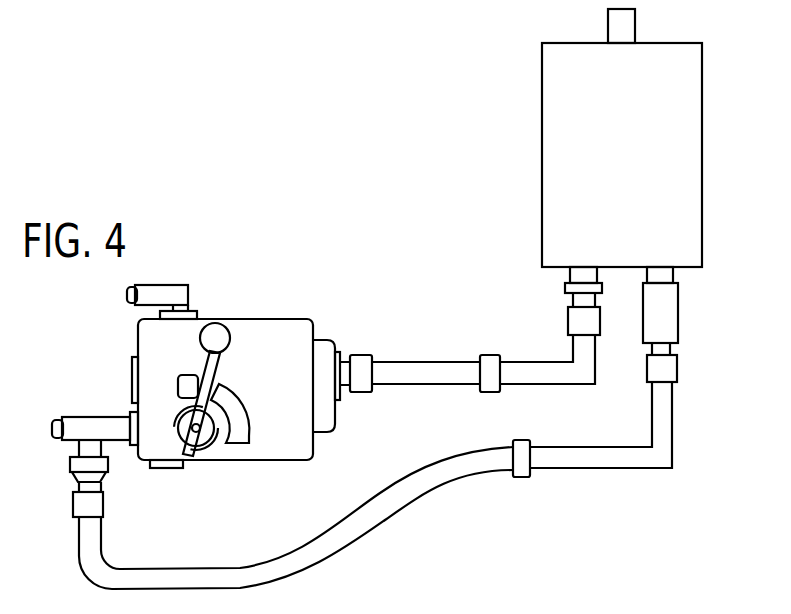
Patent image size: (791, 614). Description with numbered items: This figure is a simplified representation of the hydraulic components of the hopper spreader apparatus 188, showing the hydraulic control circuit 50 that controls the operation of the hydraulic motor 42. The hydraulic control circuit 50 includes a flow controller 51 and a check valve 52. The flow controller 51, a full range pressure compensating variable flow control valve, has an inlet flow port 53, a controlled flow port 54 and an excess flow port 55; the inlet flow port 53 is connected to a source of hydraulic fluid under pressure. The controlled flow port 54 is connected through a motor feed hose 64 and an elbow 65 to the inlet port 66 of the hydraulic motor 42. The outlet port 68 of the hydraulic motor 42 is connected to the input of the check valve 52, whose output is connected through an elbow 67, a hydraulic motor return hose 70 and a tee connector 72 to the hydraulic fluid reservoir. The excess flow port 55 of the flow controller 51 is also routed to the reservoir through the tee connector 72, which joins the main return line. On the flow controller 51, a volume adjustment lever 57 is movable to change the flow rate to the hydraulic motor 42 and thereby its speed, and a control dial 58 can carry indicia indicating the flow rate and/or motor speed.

The sprayer apparatus 188 is at (243, 0).
The hydraulic motor 42 is at (553, 132).
The hydraulic control circuit 50 is at (572, 517).
The flow controller 51 is at (290, 318).
The check valve 52 is at (668, 320).
The inlet flow port 53 is at (208, 318).
The controlled flow port 54 is at (343, 348).
The excess flow port 55 is at (126, 445).
The volume adjustment lever 57 is at (212, 358).
The control dial 58 is at (238, 418).
The motor feed hose 64 is at (418, 367).
The elbow 65 is at (558, 386).
The inlet port 66 is at (562, 280).
The elbow 67 is at (665, 431).
The outlet port 68 is at (675, 274).
The hydraulic motor return hose 70 is at (367, 530).
The tee connector 72 is at (88, 423).